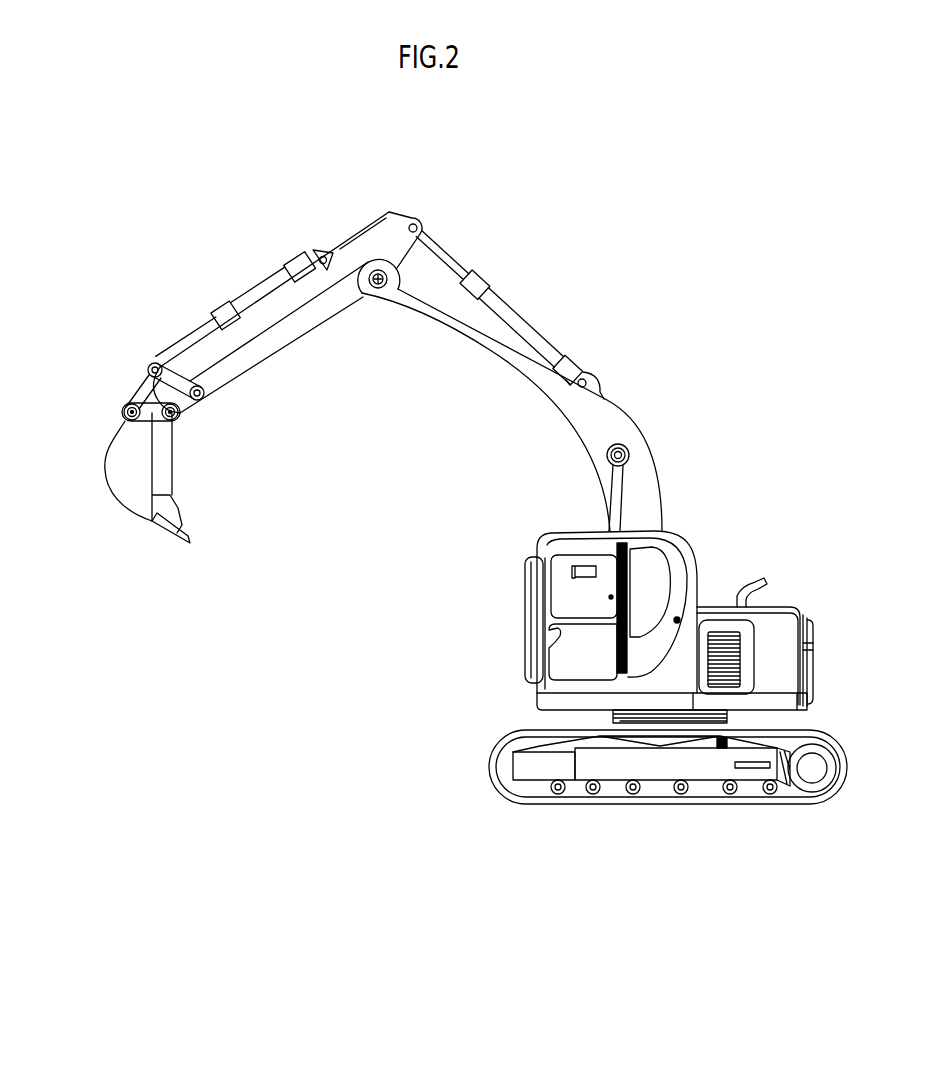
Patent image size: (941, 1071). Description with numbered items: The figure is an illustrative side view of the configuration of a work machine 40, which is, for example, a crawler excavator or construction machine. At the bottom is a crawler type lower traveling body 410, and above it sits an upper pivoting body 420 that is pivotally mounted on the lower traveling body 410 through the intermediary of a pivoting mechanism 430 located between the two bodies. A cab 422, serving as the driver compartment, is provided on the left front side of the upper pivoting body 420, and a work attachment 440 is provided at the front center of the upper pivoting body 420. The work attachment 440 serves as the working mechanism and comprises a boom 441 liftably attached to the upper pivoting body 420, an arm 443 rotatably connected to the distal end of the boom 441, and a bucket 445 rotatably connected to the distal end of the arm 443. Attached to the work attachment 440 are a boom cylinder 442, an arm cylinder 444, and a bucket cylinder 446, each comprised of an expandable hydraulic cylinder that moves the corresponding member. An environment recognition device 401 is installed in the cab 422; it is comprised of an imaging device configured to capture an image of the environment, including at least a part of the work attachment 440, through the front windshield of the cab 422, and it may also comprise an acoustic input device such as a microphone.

The work machine 40 is at (778, 358).
The environment recognition device 401 is at (673, 547).
The lower traveling body 410 is at (848, 751).
The upper pivoting body 420 is at (822, 647).
The cab 422 is at (718, 545).
The pivoting mechanism 430 is at (832, 732).
The work attachment 440 is at (452, 214).
The boom 441 is at (654, 487).
The boom cylinder 442 is at (609, 513).
The arm 443 is at (288, 342).
The arm cylinder 444 is at (518, 316).
The bucket 445 is at (104, 463).
The bucket cylinder 446 is at (249, 298).